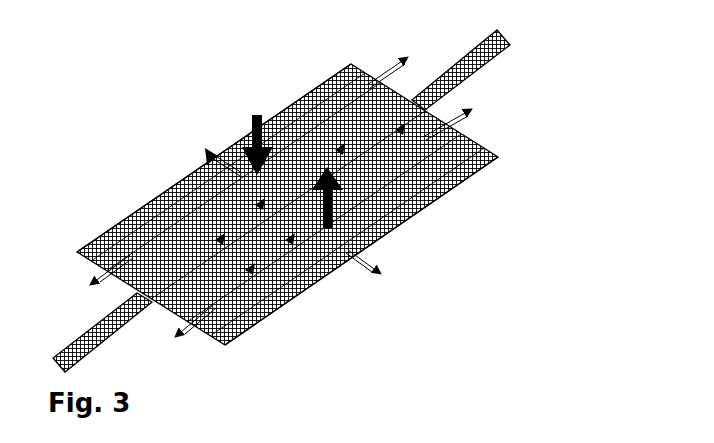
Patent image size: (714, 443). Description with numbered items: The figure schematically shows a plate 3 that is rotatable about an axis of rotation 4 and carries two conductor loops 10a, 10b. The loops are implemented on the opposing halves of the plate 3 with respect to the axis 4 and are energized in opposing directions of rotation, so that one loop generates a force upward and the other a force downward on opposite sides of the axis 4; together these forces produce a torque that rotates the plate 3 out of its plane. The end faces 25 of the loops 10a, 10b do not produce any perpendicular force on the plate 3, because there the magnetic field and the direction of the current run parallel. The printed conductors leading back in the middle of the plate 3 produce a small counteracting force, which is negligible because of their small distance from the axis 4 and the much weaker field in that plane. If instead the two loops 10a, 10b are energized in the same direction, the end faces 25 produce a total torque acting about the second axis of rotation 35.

The plate 3 is at (498, 157).
The axis of rotation 4 is at (507, 37).
The conductor loop 10a is at (203, 165).
The conductor loop 10b is at (423, 210).
The end faces 25 is at (357, 97).
The second axis of rotation 35 is at (348, 250).